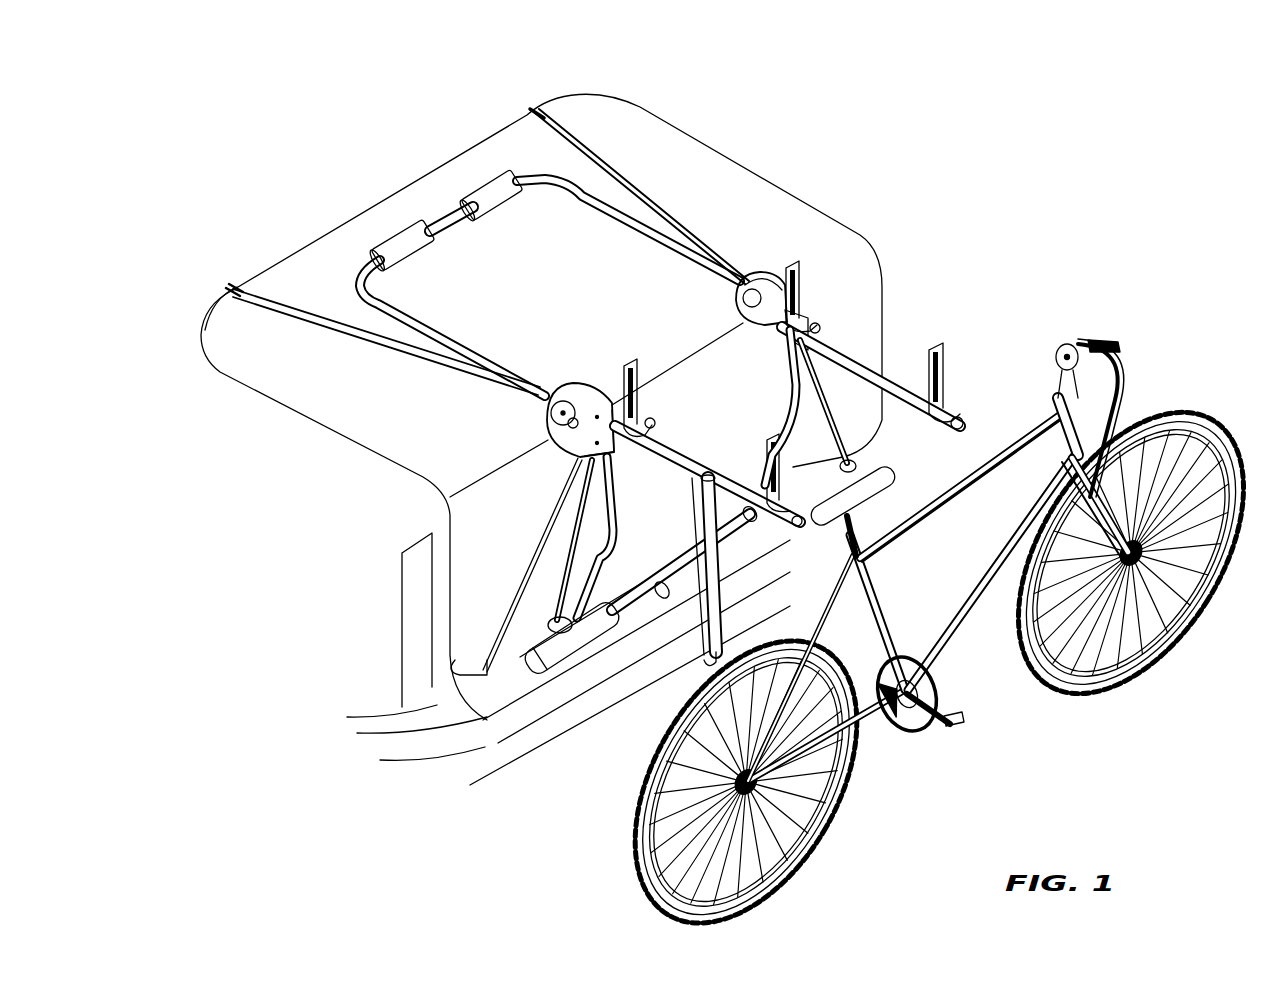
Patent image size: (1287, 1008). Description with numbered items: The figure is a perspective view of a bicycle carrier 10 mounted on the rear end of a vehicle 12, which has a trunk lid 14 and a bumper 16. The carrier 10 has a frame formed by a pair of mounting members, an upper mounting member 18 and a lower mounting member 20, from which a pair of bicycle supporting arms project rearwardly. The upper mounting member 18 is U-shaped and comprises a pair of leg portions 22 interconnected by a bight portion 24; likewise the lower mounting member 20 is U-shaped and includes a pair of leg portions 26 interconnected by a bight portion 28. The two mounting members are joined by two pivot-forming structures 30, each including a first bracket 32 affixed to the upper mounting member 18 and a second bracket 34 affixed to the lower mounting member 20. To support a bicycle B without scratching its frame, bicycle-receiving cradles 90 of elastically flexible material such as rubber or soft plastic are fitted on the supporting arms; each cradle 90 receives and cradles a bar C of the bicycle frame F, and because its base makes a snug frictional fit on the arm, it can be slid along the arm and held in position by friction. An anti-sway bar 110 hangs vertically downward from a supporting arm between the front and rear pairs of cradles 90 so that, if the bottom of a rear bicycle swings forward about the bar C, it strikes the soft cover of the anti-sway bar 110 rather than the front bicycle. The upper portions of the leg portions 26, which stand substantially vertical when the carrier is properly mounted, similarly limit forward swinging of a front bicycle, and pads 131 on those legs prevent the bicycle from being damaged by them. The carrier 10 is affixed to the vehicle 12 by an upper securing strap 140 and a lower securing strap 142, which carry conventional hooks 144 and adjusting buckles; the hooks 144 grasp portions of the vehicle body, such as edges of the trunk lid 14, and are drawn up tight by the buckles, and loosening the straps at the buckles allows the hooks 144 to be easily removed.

The bicycle carrier 10 is at (893, 360).
The vehicle 12 is at (541, 439).
The trunk lid 14 is at (667, 150).
The bumper 16 is at (563, 713).
The upper mounting member 18 is at (550, 275).
The lower mounting member 20 is at (583, 567).
The leg portions 22 is at (463, 343).
The bight portion 24 is at (447, 215).
The leg portions 26 is at (548, 610).
The bight portion 28 is at (640, 623).
The pivot-forming structures 30 is at (636, 346).
The first bracket 32 is at (570, 380).
The second bracket 34 is at (590, 450).
The bicycle-receiving cradles 90 is at (650, 400).
The anti-sway bar 110 is at (697, 529).
The pads 131 is at (588, 535).
The upper securing strap 140 is at (578, 143).
The lower securing strap 142 is at (207, 323).
The hooks 144 is at (531, 115).
The bicycle B is at (938, 633).
The bar C is at (940, 513).
The bicycle frame F is at (979, 467).